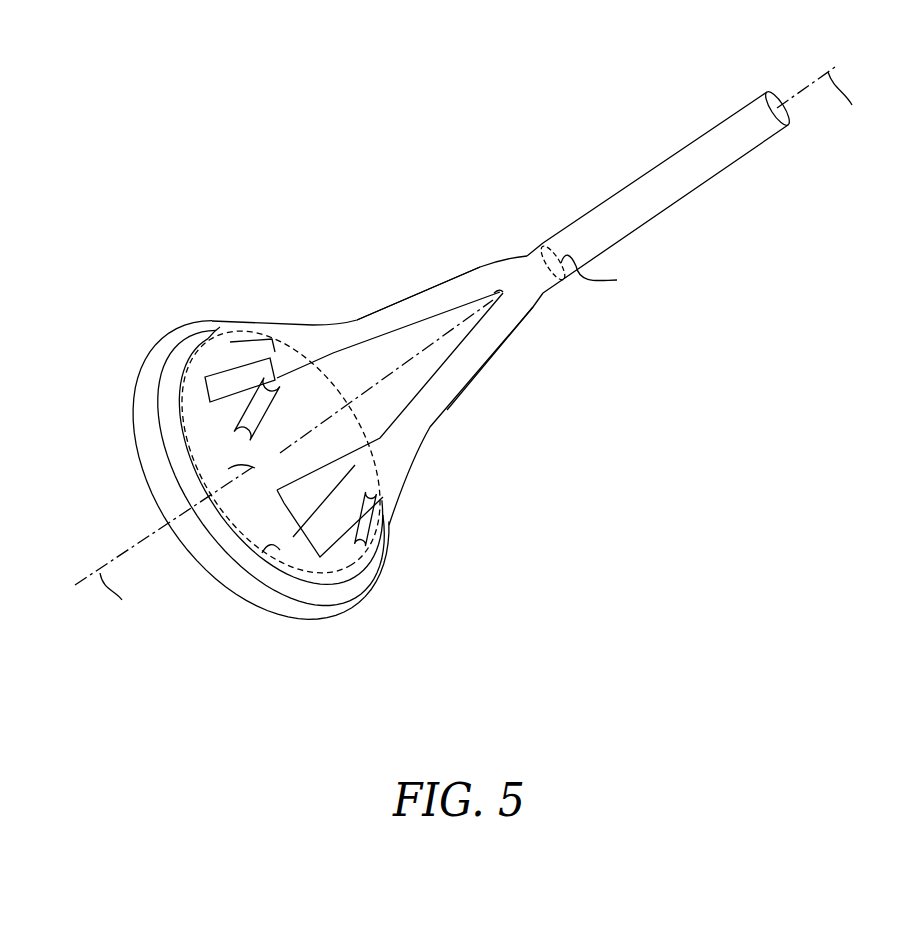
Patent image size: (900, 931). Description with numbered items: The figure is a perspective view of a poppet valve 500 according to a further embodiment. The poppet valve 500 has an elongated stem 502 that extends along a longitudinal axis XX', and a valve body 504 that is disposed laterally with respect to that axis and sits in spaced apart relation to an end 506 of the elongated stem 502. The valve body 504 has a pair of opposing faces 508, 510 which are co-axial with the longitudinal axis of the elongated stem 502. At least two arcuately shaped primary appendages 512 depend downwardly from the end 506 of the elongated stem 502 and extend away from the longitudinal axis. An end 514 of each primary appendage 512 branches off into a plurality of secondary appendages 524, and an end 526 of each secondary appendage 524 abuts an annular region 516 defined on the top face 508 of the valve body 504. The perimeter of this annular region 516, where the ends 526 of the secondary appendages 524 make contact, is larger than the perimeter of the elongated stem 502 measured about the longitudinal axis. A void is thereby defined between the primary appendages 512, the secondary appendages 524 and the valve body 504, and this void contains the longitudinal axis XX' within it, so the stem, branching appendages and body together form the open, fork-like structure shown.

The poppet valve 500 is at (236, 56).
The elongated stem 502 is at (665, 154).
The valve body 504 is at (241, 590).
The end of the elongated stem 506 is at (527, 255).
The top face 508 is at (200, 550).
The opposing face 510 is at (133, 440).
The primary appendage 512 is at (474, 261).
The end of primary appendage 514 is at (360, 317).
The annular region 516 is at (280, 552).
The secondary appendage 524 is at (268, 403).
The end of secondary appendage 526 is at (233, 427).